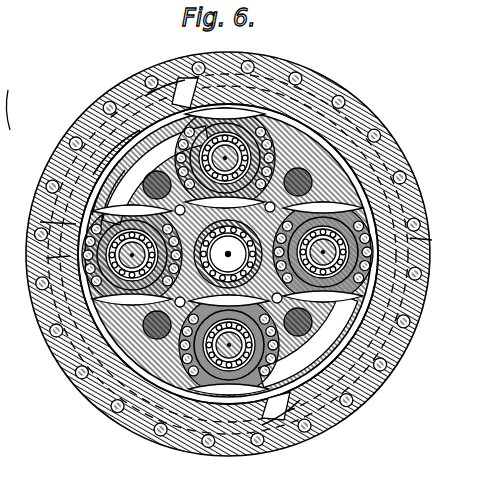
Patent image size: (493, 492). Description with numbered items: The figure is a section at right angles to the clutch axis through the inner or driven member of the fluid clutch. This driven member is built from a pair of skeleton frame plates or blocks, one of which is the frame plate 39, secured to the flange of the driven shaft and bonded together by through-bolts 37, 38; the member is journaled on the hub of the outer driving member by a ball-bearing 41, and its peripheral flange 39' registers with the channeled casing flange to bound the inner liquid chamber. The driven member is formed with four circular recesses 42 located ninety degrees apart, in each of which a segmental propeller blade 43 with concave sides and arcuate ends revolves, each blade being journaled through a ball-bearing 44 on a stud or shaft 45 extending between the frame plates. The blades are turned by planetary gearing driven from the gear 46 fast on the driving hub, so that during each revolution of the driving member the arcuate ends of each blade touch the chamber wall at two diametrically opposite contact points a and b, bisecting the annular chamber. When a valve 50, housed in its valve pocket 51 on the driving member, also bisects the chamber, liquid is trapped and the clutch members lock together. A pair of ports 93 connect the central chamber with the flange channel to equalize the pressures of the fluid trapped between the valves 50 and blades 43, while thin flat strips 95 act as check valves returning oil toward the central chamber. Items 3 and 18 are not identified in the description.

The circular recess 42 is at (372, 322).
The segmental propeller blade 43 is at (296, 52).
The through-bolt 38 is at (300, 150).
The through-bolt 37 is at (322, 176).
The port 93 is at (296, 158).
The skeleton frame plate 39 is at (95, 140).
The peripheral flange 39' is at (69, 182).
The ball-bearing 41 is at (106, 196).
The gear 46 is at (228, 254).
The ball-bearing 44 is at (345, 268).
The stud or shaft 45 is at (229, 348).
The thin flat strip 95 is at (212, 78).
The valve 50 is at (182, 82).
The valve pocket 51 is at (158, 96).
The contact point b is at (432, 240).
The contact point a is at (46, 258).
The casing 3 is at (40, 222).
The shaft 18 is at (23, 110).